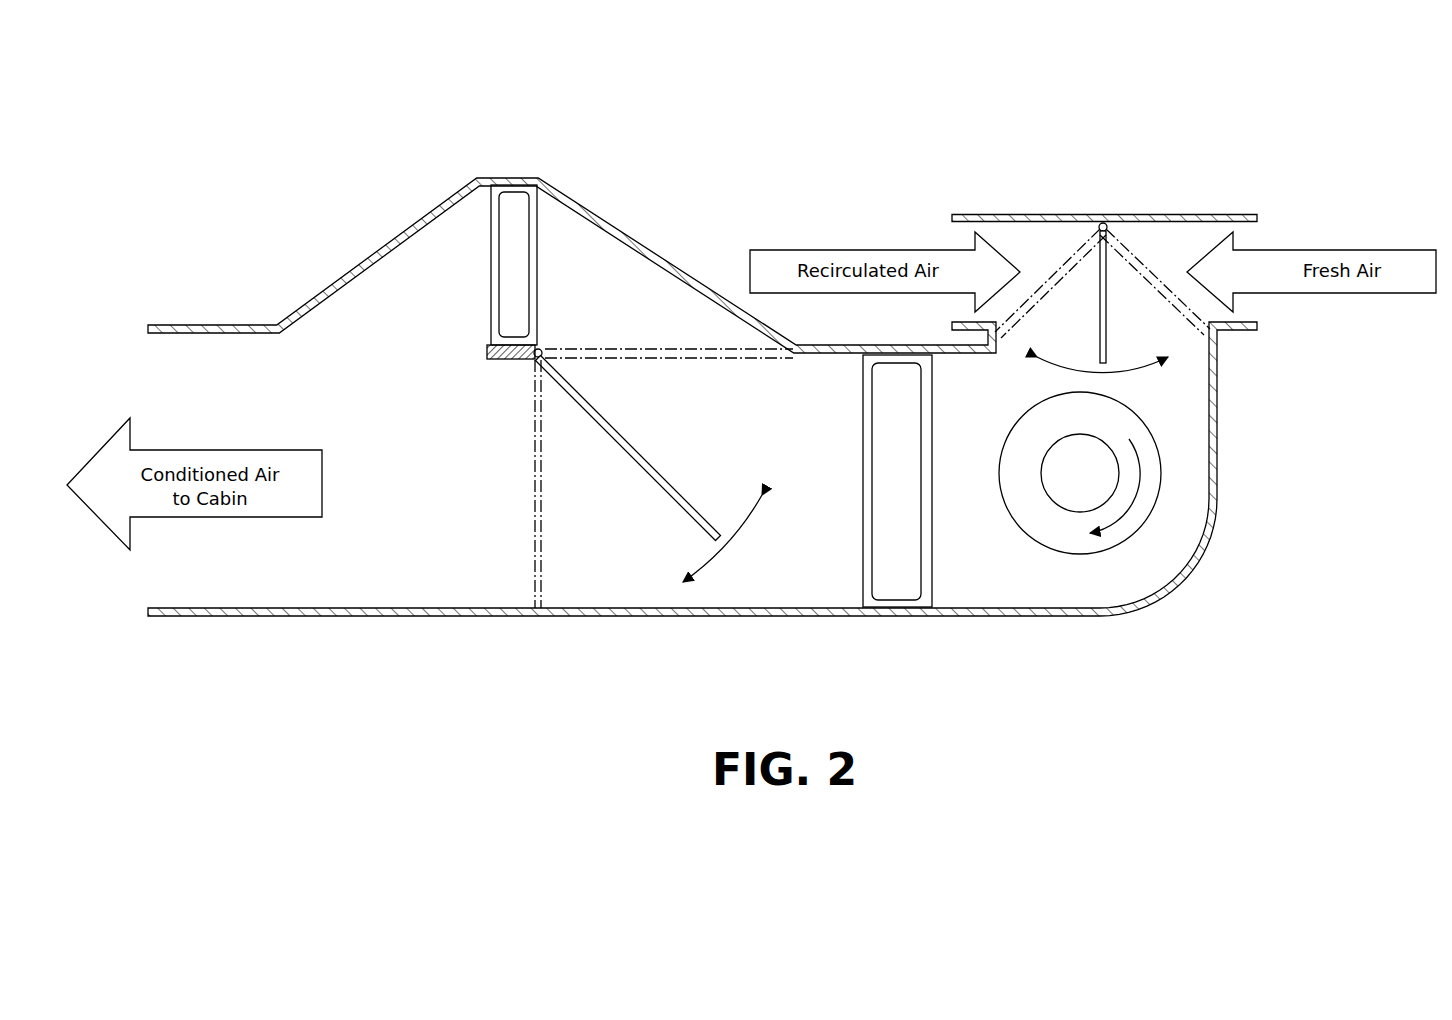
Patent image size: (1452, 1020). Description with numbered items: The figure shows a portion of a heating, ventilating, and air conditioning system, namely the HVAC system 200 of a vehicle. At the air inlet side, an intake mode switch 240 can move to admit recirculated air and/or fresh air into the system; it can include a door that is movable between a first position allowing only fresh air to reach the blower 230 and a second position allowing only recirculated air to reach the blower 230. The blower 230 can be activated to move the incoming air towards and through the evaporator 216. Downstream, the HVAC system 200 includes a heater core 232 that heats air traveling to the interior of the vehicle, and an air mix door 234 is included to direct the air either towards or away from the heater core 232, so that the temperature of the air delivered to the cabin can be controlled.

The HVAC system 200 is at (283, 217).
The evaporator 216 is at (893, 583).
The blower 230 is at (1090, 557).
The heater core 232 is at (507, 232).
The air mix door 234 is at (597, 405).
The intake mode switch 240 is at (1108, 277).